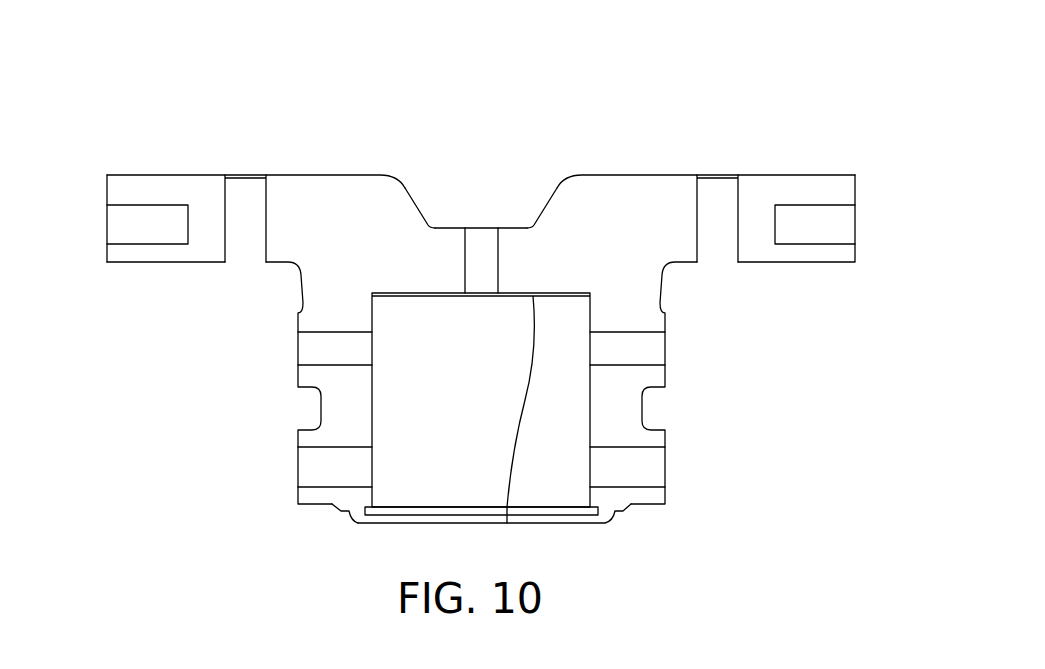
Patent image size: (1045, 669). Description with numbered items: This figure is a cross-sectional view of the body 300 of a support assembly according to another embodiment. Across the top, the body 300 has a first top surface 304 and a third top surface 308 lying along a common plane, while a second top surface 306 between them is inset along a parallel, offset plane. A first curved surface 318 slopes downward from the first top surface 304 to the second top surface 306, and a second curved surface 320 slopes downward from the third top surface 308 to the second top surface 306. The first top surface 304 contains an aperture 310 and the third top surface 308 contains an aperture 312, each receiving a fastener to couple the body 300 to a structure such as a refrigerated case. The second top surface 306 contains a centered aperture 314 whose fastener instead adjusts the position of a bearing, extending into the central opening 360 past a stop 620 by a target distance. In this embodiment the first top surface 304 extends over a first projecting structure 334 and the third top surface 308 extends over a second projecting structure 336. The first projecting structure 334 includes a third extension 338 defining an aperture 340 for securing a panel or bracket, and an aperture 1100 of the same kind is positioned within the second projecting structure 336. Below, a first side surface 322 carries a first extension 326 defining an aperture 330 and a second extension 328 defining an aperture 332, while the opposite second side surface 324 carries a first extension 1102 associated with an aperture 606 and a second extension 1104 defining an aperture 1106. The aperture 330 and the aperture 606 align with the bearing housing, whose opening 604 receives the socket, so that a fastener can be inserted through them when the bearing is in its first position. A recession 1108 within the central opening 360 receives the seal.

The body 300 is at (608, 121).
The first top surface 304 is at (343, 175).
The second top surface 306 is at (450, 228).
The third top surface 308 is at (638, 175).
The aperture 310 is at (246, 178).
The aperture 312 is at (727, 175).
The aperture 314 is at (484, 228).
The first curved surface 318 is at (428, 218).
The second curved surface 320 is at (536, 199).
The first side surface 322 is at (320, 412).
The second side surface 324 is at (648, 407).
The first extension 326 is at (297, 312).
The second extension 328 is at (297, 498).
The aperture 330 is at (297, 350).
The aperture 332 is at (297, 466).
The first projecting structure 334 is at (167, 186).
The second projecting structure 336 is at (756, 247).
The third extension 338 is at (106, 190).
The aperture 340 is at (162, 246).
The central opening 360 is at (584, 524).
The opening 604 is at (605, 527).
The aperture 606 is at (645, 333).
The stop 620 is at (507, 523).
The aperture 1100 is at (800, 205).
The first extension 1102 is at (668, 320).
The second extension 1104 is at (667, 438).
The aperture 1106 is at (648, 487).
The recession 1108 is at (345, 518).